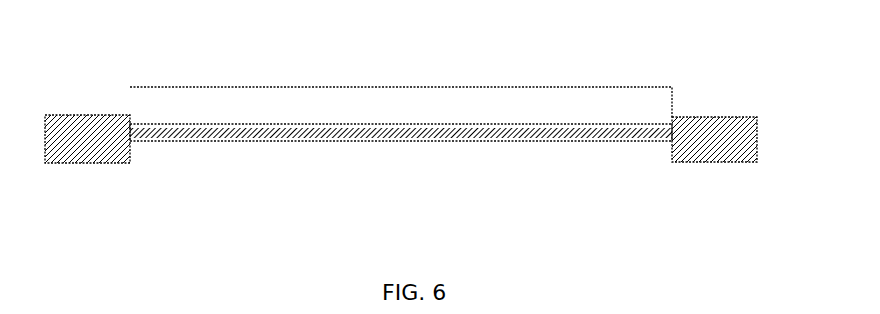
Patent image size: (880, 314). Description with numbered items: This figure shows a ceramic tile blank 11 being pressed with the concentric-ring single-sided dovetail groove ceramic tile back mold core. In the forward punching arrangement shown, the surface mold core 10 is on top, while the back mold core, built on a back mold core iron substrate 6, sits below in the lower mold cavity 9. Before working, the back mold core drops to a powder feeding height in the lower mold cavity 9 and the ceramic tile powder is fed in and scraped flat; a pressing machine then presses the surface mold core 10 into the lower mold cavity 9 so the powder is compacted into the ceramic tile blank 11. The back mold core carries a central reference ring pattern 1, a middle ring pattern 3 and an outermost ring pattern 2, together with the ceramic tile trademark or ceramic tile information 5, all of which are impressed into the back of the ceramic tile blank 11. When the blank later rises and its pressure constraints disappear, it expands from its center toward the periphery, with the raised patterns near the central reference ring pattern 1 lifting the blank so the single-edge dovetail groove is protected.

The central reference ring pattern 1 is at (372, 141).
The outermost ring pattern 2 is at (157, 141).
The middle ring pattern 3 is at (248, 141).
The ceramic tile trademark or ceramic tile information 5 is at (400, 141).
The back mold core iron substrate 6 is at (538, 157).
The lower mold cavity 9 is at (75, 115).
The surface mold core 10 is at (275, 102).
The ceramic tile blank 11 is at (345, 130).